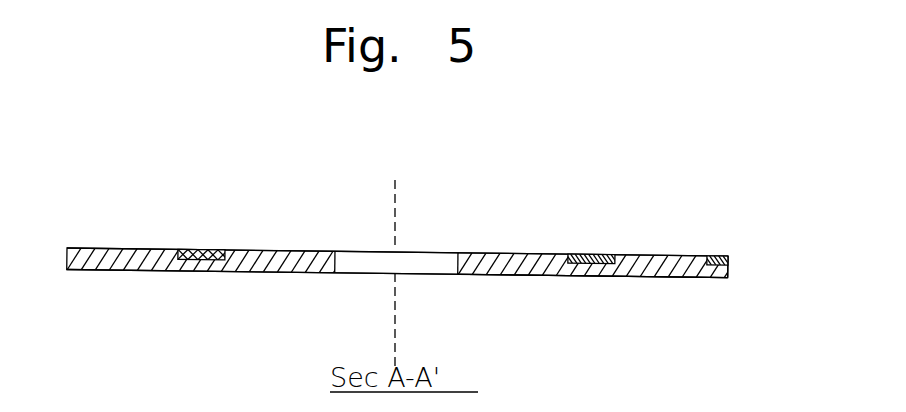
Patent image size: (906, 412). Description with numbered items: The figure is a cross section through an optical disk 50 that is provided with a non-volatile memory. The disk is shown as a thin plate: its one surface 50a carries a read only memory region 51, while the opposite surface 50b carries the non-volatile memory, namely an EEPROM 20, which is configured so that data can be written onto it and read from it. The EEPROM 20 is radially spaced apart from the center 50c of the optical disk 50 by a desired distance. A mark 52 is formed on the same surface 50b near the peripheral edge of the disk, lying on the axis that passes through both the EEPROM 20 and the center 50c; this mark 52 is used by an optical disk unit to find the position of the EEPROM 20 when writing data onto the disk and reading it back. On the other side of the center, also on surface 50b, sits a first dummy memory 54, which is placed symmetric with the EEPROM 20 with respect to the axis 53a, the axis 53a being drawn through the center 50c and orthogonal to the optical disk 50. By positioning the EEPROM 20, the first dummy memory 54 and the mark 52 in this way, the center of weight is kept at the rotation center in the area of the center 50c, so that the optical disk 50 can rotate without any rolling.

The optical disk 50 is at (411, 169).
The one surface of the optical disk 50a is at (397, 273).
The other surface of the optical disk 50b is at (397, 252).
The center of the optical disk 50c is at (396, 252).
The read only memory region 51 is at (593, 275).
The mark 52 is at (717, 260).
The axis 53a is at (404, 183).
The first dummy memory 54 is at (203, 254).
The EEPROM 20 is at (590, 259).